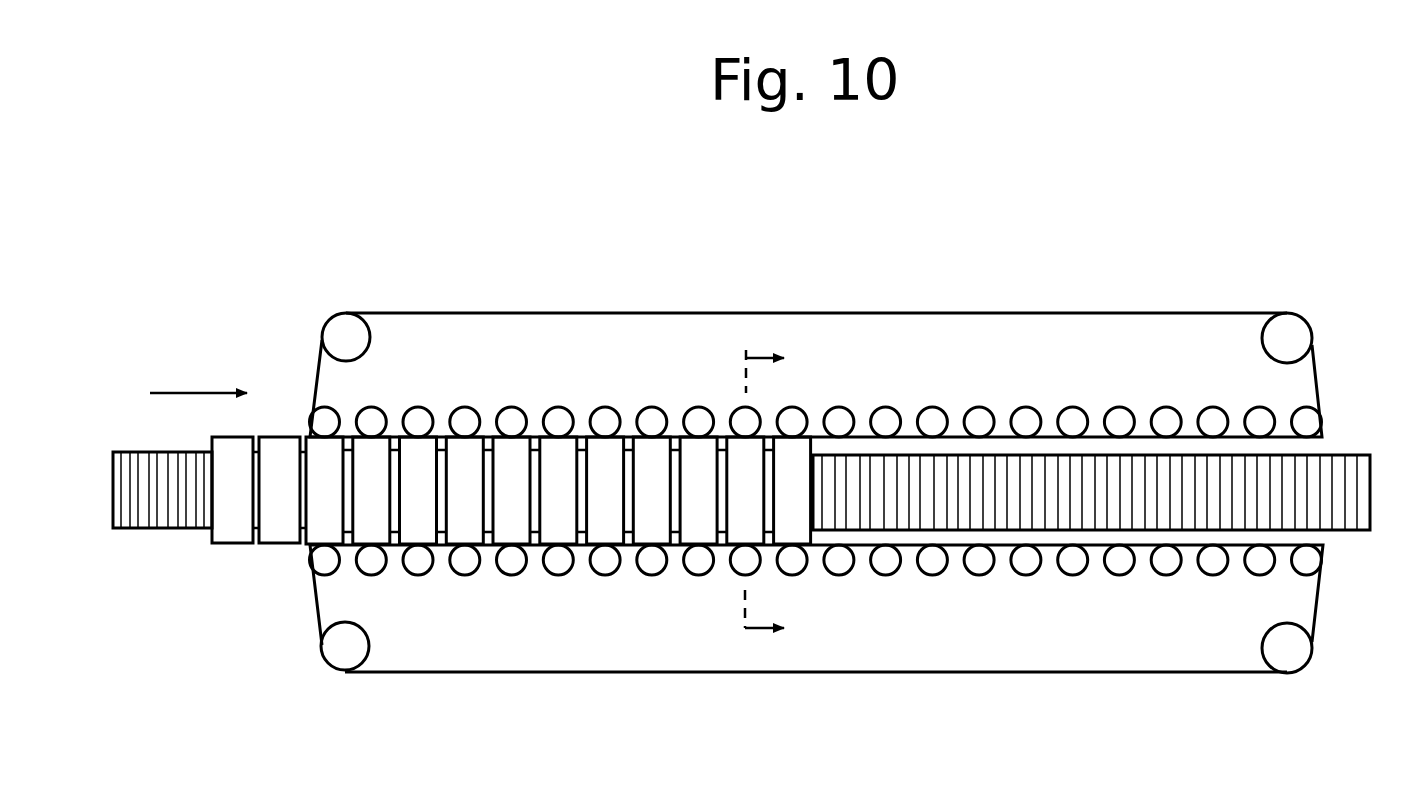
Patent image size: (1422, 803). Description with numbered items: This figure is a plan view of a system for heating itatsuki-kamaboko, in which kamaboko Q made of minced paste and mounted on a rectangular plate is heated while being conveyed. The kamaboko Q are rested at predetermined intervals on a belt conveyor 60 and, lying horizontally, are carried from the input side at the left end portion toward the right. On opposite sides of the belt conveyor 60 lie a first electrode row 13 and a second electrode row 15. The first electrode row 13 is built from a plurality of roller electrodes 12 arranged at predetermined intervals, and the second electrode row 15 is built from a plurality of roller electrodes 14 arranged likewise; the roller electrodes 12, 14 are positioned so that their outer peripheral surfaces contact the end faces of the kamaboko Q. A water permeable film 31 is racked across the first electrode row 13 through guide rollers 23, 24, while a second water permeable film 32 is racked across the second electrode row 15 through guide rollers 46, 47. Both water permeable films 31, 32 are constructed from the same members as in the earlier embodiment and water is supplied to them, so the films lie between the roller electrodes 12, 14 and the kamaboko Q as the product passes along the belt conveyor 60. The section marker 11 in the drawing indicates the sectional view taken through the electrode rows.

The kamaboko Q is at (235, 537).
The belt conveyor 60 is at (1340, 455).
The second electrode row 15 is at (1105, 390).
The first electrode row 13 is at (1337, 556).
The water permeable film 32 is at (863, 312).
The water permeable film 31 is at (900, 672).
The guide roller 46 is at (340, 322).
The guide roller 47 is at (1291, 330).
The guide roller 23 is at (343, 657).
The guide roller 24 is at (1295, 658).
The roller electrodes 14 is at (510, 408).
The roller electrodes 12 is at (597, 572).
The section line XI-XI 11 is at (787, 492).